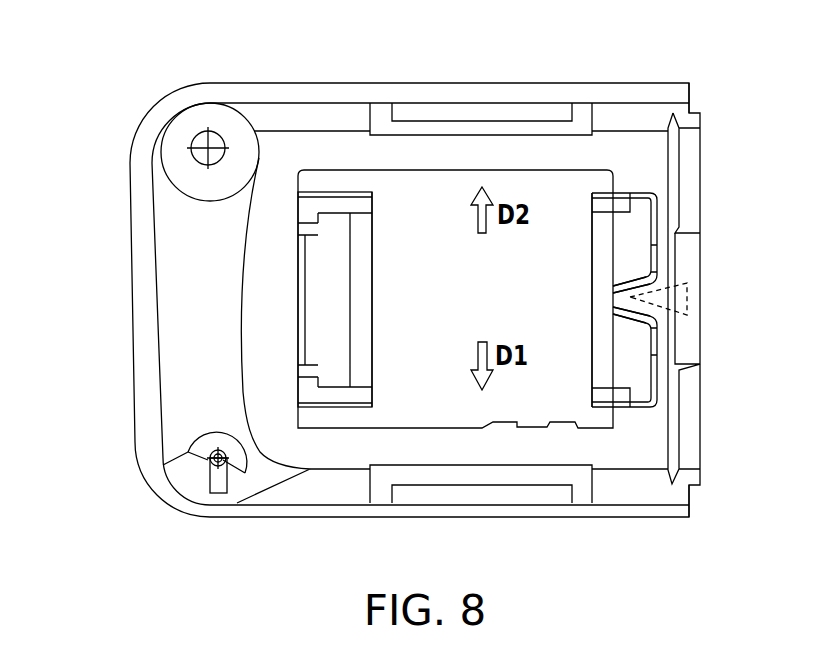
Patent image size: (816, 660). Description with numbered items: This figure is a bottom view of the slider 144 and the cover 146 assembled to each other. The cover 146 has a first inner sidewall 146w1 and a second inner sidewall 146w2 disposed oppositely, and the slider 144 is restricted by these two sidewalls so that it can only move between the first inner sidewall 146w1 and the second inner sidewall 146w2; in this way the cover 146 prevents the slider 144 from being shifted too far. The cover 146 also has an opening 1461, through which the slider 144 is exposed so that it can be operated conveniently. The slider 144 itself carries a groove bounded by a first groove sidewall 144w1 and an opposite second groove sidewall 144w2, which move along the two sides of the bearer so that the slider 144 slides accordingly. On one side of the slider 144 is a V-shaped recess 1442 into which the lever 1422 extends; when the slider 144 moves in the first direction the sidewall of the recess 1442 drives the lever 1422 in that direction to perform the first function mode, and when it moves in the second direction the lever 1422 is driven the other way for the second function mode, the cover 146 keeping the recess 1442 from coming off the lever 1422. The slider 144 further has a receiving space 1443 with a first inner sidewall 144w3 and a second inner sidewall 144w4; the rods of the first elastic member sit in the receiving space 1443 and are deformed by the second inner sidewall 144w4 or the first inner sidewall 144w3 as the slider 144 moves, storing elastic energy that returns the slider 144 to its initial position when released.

The cover 146 is at (342, 83).
The first inner sidewall 146w1 is at (538, 455).
The second inner sidewall 146w2 is at (467, 155).
The opening 1461 is at (565, 193).
The slider 144 is at (686, 300).
The first groove sidewall 144w1 is at (372, 367).
The second groove sidewall 144w2 is at (592, 370).
The first inner sidewall 144w3 is at (335, 387).
The second inner sidewall 144w4 is at (335, 213).
The recess 1442 is at (640, 307).
The receiving space 1443 is at (325, 312).
The lever 1422 is at (687, 283).